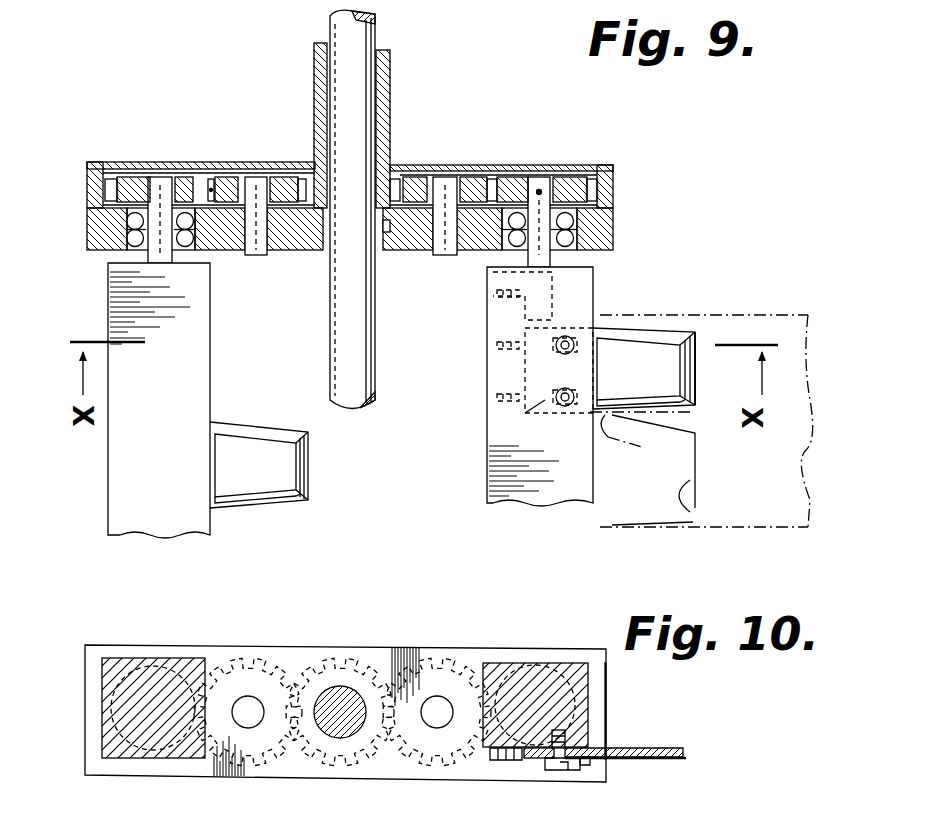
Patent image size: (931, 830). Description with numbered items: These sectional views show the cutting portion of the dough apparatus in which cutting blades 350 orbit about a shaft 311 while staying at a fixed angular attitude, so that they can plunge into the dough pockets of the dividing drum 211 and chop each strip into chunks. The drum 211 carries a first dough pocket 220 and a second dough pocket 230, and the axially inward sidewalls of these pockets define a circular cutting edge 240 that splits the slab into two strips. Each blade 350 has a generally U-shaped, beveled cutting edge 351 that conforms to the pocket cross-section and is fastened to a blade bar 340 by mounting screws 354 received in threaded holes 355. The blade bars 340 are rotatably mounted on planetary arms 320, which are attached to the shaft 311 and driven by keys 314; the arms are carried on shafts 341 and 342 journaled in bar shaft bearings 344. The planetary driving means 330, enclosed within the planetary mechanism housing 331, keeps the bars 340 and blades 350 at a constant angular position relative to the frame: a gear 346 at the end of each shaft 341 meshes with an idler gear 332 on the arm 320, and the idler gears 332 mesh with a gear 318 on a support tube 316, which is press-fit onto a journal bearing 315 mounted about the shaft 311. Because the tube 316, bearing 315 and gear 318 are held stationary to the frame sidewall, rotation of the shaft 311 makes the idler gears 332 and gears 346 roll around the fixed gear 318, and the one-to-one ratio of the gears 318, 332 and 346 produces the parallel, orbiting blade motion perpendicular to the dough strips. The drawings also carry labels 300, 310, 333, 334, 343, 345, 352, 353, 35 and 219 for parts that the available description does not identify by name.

In FIG. 9, the machine assembly 300 is at (218, 97).
In FIG. 9, the spindle head assembly 310 is at (640, 142).
In FIG. 9, the shaft 311 is at (345, 362).
In FIG. 10, the shaft 311 is at (340, 717).
In FIG. 9, the keys 314 is at (396, 232).
In FIG. 10, the keys 314 is at (400, 672).
In FIG. 9, the journal bearing 315 is at (328, 50).
In FIG. 9, the support tube 316 is at (392, 60).
In FIG. 9, the gear 318 is at (395, 183).
In FIG. 10, the gear 318 is at (336, 665).
In FIG. 9, the planetary arm 320 is at (612, 226).
In FIG. 10, the planetary arm 320 is at (226, 660).
In FIG. 9, the planetary driving means 330 is at (648, 176).
In FIG. 9, the planetary mechanism housing 331 is at (100, 162).
In FIG. 9, the idler gear 332 is at (285, 188).
In FIG. 10, the idler gear 332 is at (280, 668).
In FIG. 9, the gear shaft 333 is at (258, 236).
In FIG. 10, the gear shaft 333 is at (248, 714).
In FIG. 9, the spacer 334 is at (228, 186).
In FIG. 9, the blade bar 340 is at (505, 490).
In FIG. 10, the blade bar 340 is at (110, 660).
In FIG. 9, the shaft 341 is at (540, 195).
In FIG. 10, the shaft 341 is at (535, 700).
In FIG. 9, the shaft 342 is at (158, 263).
In FIG. 9, the bracket 343 is at (500, 305).
In FIG. 9, the bar shaft bearings 344 is at (565, 230).
In FIG. 9, the pin 345 is at (505, 350).
In FIG. 10, the pin 345 is at (500, 754).
In FIG. 9, the gear 346 is at (133, 186).
In FIG. 10, the gear 346 is at (188, 656).
In FIG. 9, the cutting blade 350 is at (618, 362).
In FIG. 10, the cutting blade 350 is at (632, 746).
In FIG. 9, the cutting edge 351 is at (697, 376).
In FIG. 10, the cutting edge 351 is at (688, 758).
In FIG. 9, the mounting plate 352 is at (590, 312).
In FIG. 10, the mounting plate 352 is at (535, 762).
In FIG. 9, the screw 353 is at (565, 406).
In FIG. 10, the screw 353 is at (586, 770).
In FIG. 9, the mounting screws 354 is at (552, 396).
In FIG. 10, the mounting screws 354 is at (574, 766).
In FIG. 10, the threaded holes 355 is at (600, 716).
In FIG. 9, the bracket 35 is at (280, 434).
In FIG. 9, the dividing drum 211 is at (807, 310).
In FIG. 9, the frame member 219 is at (612, 519).
In FIG. 9, the first dough pocket 220 is at (665, 338).
In FIG. 9, the second dough pocket 230 is at (686, 526).
In FIG. 9, the circular cutting edge 240 is at (648, 470).